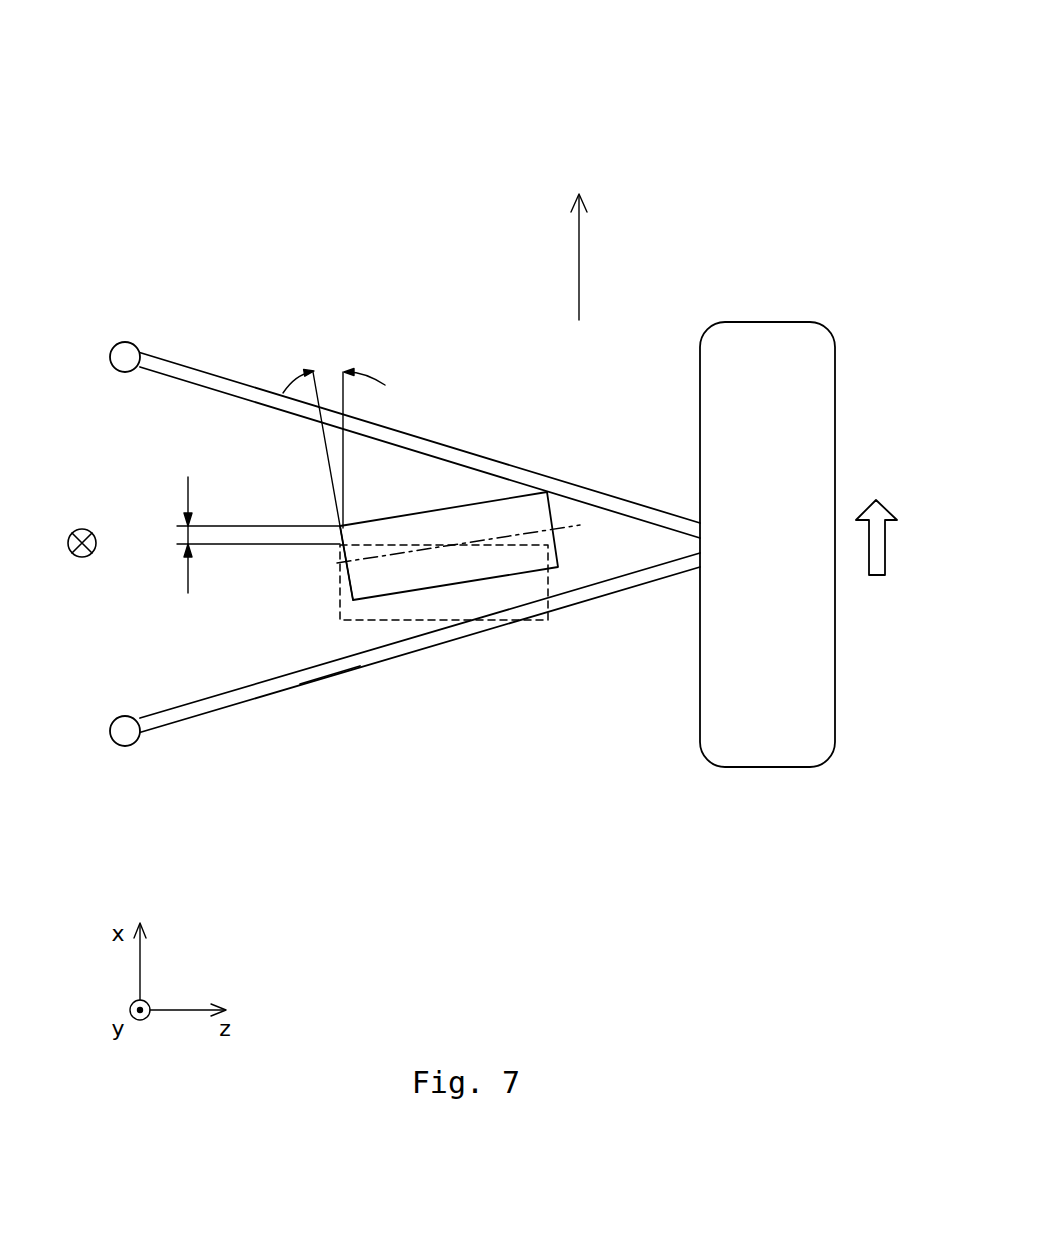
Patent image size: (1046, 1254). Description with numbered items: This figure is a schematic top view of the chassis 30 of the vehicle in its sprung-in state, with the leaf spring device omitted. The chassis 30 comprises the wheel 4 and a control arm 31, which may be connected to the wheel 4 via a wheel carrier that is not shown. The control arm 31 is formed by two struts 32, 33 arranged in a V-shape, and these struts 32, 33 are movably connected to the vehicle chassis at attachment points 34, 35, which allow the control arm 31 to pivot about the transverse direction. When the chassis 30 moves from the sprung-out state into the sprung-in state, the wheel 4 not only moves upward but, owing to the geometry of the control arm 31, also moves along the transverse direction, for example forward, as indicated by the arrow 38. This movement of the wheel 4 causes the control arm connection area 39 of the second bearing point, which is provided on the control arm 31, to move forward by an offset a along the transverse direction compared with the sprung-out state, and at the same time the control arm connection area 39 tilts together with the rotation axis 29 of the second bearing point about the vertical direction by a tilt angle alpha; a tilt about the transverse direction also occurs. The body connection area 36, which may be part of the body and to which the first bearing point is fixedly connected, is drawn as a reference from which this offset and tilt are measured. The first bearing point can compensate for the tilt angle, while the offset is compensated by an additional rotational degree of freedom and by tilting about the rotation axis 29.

The chassis 30 is at (459, 97).
The wheel 4 is at (763, 767).
The rotation axis 29 is at (331, 566).
The control arm 31 is at (327, 677).
The strut 32 is at (240, 703).
The strut 33 is at (221, 377).
The attachment point 34 is at (125, 746).
The attachment point 35 is at (126, 342).
The body connection area 36 is at (403, 620).
The arrow 38 is at (885, 542).
The control arm connection area 39 is at (463, 505).